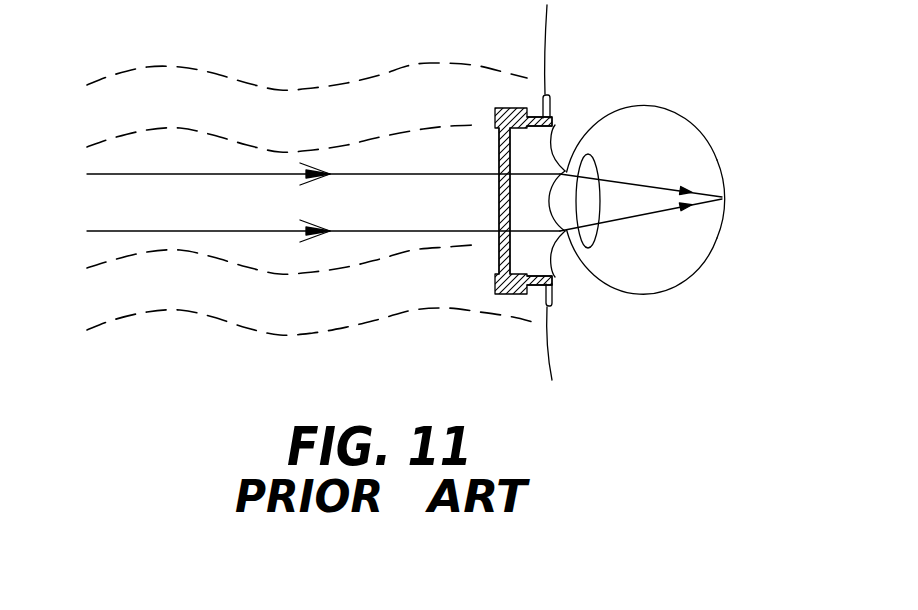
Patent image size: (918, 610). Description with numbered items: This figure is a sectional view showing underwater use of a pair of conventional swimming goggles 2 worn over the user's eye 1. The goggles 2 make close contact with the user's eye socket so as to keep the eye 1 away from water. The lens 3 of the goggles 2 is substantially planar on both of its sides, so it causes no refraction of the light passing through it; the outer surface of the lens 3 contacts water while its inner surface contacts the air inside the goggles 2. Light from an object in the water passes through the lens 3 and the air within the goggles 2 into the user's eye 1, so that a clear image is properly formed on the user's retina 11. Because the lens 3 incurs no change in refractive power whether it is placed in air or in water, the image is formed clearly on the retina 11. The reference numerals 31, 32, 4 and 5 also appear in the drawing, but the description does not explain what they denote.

The eye 1 is at (668, 123).
The retina 11 is at (767, 94).
The swimming goggles 2 is at (518, 115).
The lens 3 is at (497, 132).
The lens plate 31 is at (500, 237).
The flange tab 32 is at (555, 277).
The incident parallel light 4 is at (458, 160).
The eye relief space 5 is at (535, 148).